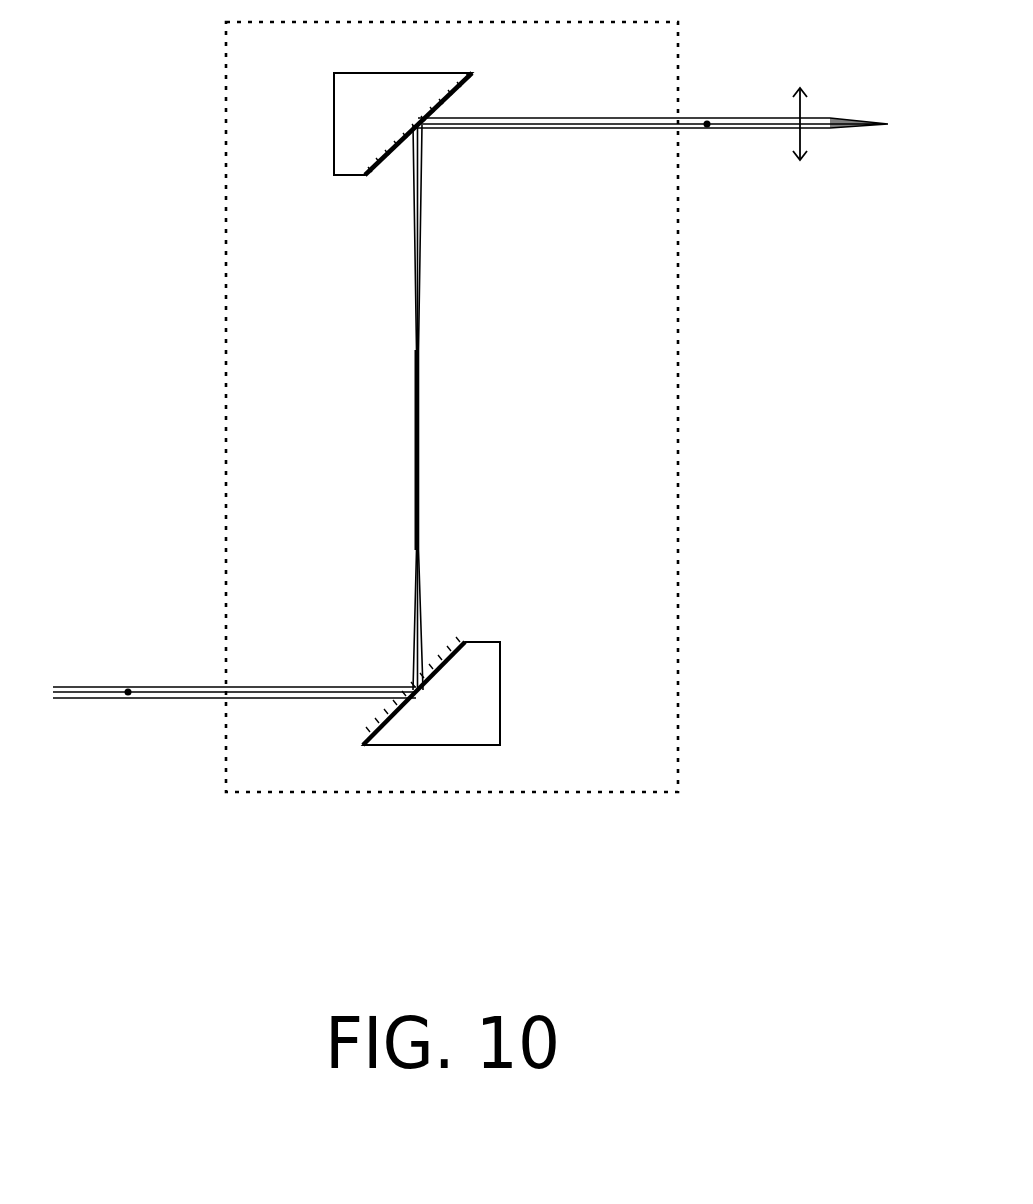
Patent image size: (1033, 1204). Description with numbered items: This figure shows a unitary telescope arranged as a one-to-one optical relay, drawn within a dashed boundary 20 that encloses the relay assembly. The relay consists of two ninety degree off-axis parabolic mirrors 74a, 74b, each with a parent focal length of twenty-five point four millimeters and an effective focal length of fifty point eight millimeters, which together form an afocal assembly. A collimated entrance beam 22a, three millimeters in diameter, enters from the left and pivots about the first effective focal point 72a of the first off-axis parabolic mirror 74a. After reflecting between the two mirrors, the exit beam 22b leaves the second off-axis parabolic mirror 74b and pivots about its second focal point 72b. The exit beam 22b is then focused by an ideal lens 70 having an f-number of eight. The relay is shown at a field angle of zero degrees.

The beam steering housing 20 is at (678, 435).
The entrance beam 22a is at (260, 687).
The exit beam 22b is at (593, 132).
The ideal lens 70 is at (800, 86).
The first effective focal point 72a is at (128, 692).
The second focal point 72b is at (707, 125).
The first off-axis parabolic mirror 74a is at (500, 708).
The second off-axis parabolic mirror 74b is at (334, 93).